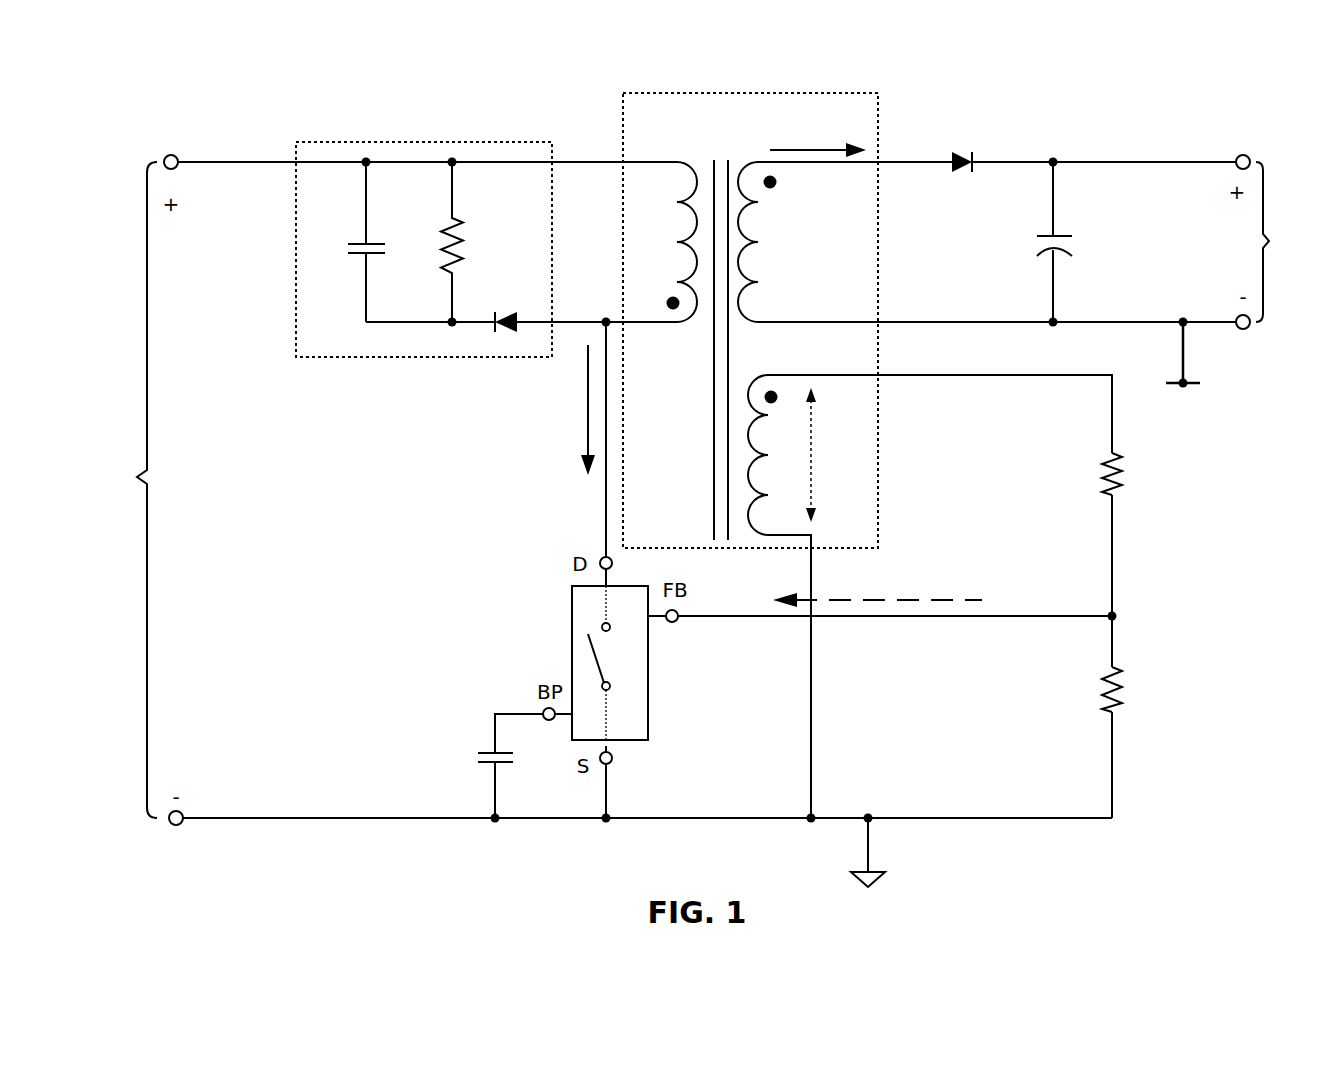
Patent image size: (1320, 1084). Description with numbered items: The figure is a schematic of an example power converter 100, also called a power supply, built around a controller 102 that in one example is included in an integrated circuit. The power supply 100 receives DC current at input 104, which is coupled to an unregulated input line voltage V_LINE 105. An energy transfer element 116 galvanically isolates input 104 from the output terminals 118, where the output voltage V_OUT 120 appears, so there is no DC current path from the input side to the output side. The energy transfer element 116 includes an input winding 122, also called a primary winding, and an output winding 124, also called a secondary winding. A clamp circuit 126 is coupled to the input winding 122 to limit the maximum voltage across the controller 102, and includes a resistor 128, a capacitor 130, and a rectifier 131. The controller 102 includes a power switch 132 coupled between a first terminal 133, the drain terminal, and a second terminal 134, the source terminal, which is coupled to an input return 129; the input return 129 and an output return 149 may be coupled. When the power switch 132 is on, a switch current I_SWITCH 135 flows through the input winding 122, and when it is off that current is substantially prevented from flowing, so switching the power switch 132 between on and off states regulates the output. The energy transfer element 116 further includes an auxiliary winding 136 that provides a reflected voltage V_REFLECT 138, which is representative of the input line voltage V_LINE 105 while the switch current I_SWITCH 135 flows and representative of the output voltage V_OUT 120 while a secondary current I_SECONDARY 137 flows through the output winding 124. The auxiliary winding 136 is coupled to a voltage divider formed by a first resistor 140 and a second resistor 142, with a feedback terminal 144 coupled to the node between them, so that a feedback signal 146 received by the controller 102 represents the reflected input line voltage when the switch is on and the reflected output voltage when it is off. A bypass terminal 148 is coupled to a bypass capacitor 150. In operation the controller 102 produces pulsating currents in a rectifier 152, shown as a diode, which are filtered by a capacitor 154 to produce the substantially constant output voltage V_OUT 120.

The power converter 100 is at (640, 86).
The controller 102 is at (651, 693).
The input 104 is at (127, 490).
The input line voltage V_LINE 105 is at (183, 490).
The energy transfer element 116 is at (878, 408).
The output terminals 118 is at (1281, 242).
The output voltage V_OUT 120 is at (1185, 242).
The input winding 122 is at (668, 330).
The output winding 124 is at (765, 212).
The clamp circuit 126 is at (373, 361).
The resistor 128 is at (436, 263).
The input return 129 is at (888, 858).
The capacitor 130 is at (343, 248).
The rectifier 131 is at (517, 307).
The power switch 132 is at (590, 623).
The first terminal 133 is at (598, 562).
The second terminal 134 is at (615, 760).
The switch current I_SWITCH 135 is at (583, 413).
The auxiliary winding 136 is at (787, 388).
The secondary current I_SECONDARY 137 is at (766, 133).
The reflected voltage V_REFLECT 138 is at (824, 465).
The first resistor 140 is at (1128, 470).
The second resistor 142 is at (1130, 688).
The feedback terminal 144 is at (680, 625).
The feedback signal 146 is at (946, 588).
The bypass terminal 148 is at (546, 722).
The output return 149 is at (1200, 388).
The bypass capacitor 150 is at (478, 756).
The rectifier 152 is at (940, 170).
The capacitor 154 is at (1035, 248).